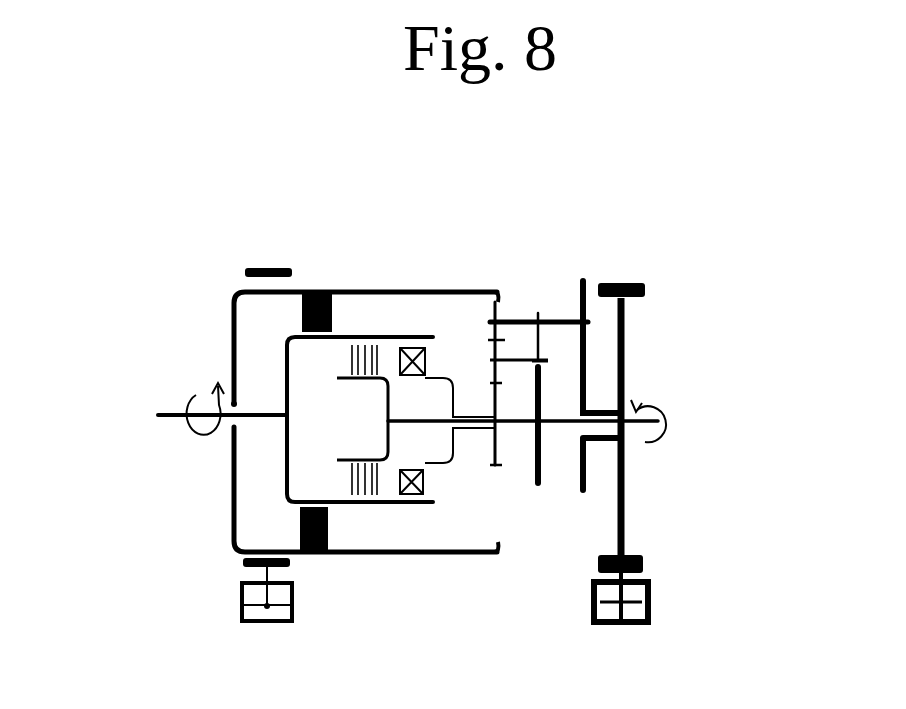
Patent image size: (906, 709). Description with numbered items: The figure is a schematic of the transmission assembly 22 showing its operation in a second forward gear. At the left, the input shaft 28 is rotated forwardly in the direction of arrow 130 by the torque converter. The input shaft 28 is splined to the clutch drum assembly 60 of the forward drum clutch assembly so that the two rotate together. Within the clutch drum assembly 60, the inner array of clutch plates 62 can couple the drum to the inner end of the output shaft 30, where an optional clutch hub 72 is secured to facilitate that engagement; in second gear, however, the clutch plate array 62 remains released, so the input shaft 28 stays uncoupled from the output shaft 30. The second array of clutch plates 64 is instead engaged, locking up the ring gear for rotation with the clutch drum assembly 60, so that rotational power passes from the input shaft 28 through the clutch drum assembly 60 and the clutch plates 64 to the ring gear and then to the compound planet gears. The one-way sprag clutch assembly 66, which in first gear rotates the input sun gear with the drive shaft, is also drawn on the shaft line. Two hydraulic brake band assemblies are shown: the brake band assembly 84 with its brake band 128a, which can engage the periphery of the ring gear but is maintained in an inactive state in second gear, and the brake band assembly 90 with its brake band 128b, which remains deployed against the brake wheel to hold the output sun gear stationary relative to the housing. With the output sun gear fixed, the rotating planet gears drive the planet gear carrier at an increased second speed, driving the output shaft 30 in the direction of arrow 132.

The transmission assembly 22 is at (212, 238).
The input shaft 28 is at (177, 422).
The arrow 130 is at (200, 437).
The brake band 128a is at (260, 258).
The second array of clutch plates 64 is at (340, 290).
The clutch drum assembly 60 is at (384, 332).
The clutch hub 72 is at (450, 282).
The one-way sprag clutch assembly 66 is at (425, 361).
The array of clutch plates 62 is at (377, 505).
The output shaft 30 is at (657, 398).
The brake band 128b is at (627, 347).
The arrow 132 is at (672, 425).
The brake band assembly 84 is at (293, 600).
The brake band assembly 90 is at (650, 607).